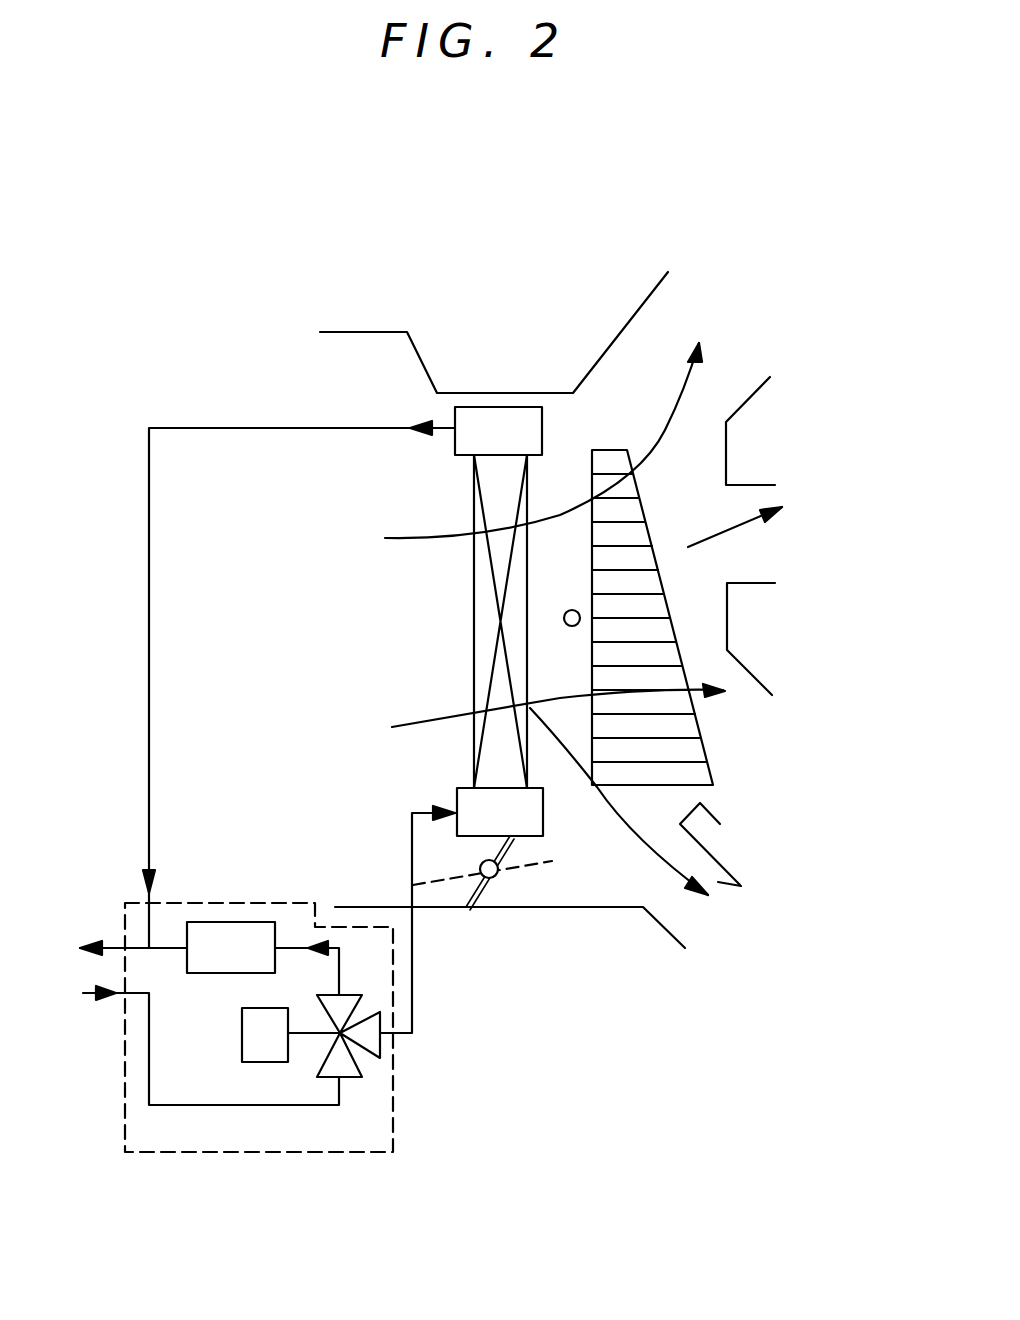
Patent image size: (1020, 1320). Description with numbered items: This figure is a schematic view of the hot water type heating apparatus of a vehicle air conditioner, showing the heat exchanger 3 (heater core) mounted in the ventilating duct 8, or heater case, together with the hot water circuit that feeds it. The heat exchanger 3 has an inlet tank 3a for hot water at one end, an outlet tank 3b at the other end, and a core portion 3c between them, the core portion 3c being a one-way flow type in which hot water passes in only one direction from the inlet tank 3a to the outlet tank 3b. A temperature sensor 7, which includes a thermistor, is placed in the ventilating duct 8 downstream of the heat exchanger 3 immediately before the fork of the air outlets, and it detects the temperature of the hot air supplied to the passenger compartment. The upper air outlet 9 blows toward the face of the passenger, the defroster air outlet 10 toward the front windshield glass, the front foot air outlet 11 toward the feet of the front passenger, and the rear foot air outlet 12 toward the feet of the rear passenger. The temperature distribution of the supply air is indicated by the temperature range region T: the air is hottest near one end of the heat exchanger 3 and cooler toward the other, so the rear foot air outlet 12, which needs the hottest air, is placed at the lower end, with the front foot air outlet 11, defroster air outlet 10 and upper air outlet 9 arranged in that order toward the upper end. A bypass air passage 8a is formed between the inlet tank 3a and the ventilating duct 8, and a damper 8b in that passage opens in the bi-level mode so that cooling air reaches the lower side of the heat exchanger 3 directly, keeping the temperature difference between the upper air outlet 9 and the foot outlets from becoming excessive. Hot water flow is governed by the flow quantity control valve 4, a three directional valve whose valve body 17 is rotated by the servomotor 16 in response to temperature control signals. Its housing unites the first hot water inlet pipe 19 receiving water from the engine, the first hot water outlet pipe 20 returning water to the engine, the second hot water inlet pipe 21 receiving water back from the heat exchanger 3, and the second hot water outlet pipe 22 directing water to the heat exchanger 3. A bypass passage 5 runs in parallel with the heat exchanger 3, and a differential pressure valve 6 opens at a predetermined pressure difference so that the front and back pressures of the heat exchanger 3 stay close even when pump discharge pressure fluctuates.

The heat exchanger 3 is at (463, 577).
The inlet tank 3a is at (543, 808).
The outlet tank 3b is at (463, 443).
The core portion 3c is at (478, 672).
The flow quantity control valve 4 is at (258, 1152).
The bypass passage 5 is at (287, 948).
The differential pressure valve 6 is at (222, 962).
The temperature sensor 7 is at (563, 618).
The ventilating duct 8 is at (590, 910).
The bypass air passage 8a is at (537, 885).
The damper 8b is at (460, 910).
The upper air outlet 9 is at (735, 342).
The defroster air outlet 10 is at (763, 540).
The front foot air outlet 11 is at (737, 748).
The rear foot air outlet 12 is at (747, 902).
The servomotor 16 is at (260, 1058).
The valve body 17 is at (320, 1058).
The first hot water inlet pipe 19 is at (343, 1097).
The first hot water outlet pipe 20 is at (108, 943).
The second hot water inlet pipe 21 is at (148, 917).
The second hot water outlet pipe 22 is at (403, 1037).
The temperature range region T is at (613, 560).